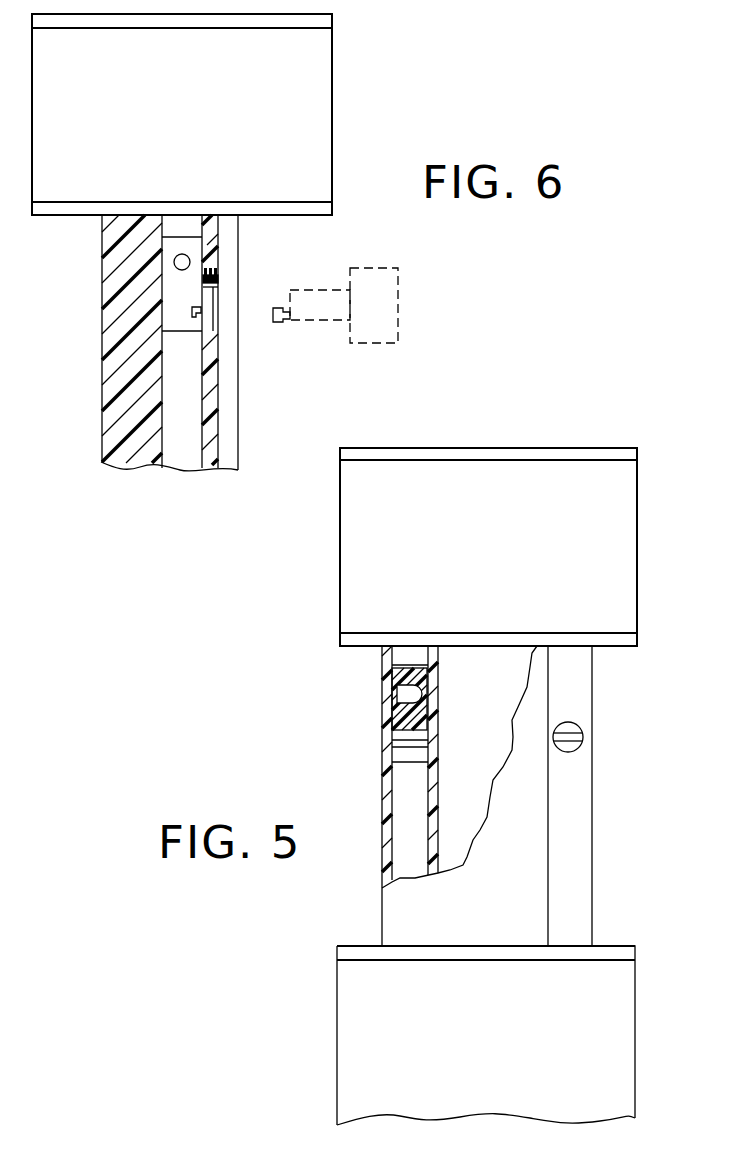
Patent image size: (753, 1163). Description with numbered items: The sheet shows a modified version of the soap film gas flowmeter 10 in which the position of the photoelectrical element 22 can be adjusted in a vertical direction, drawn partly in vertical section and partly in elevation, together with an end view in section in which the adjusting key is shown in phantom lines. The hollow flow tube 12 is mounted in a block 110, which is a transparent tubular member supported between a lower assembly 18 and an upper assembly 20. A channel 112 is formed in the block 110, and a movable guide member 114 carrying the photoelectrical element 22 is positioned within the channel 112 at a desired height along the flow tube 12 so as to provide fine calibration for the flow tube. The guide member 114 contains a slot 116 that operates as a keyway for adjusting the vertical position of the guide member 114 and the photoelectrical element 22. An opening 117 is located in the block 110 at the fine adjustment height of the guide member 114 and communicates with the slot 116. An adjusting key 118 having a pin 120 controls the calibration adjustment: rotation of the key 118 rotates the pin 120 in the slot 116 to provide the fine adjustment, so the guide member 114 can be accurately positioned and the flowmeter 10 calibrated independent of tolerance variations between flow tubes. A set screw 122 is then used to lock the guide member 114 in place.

In FIG. 5, the soap film gas flowmeter 10 is at (595, 791).
In FIG. 5, the flow tube 12 is at (438, 813).
In FIG. 5, the lower assembly 18 is at (335, 1017).
In FIG. 5, the upper assembly 20 is at (592, 443).
In FIG. 6, the photoelectrical element 22 is at (188, 256).
In FIG. 5, the photoelectrical element 22 is at (402, 692).
In FIG. 6, the block 110 is at (107, 403).
In FIG. 5, the block 110 is at (402, 908).
In FIG. 6, the channel 112 is at (193, 418).
In FIG. 6, the guide member 114 is at (173, 291).
In FIG. 5, the guide member 114 is at (400, 715).
In FIG. 6, the slot 116 is at (199, 318).
In FIG. 6, the opening 117 is at (213, 303).
In FIG. 6, the adjusting key 118 is at (373, 345).
In FIG. 6, the pin 120 is at (282, 323).
In FIG. 6, the set screw 122 is at (218, 272).